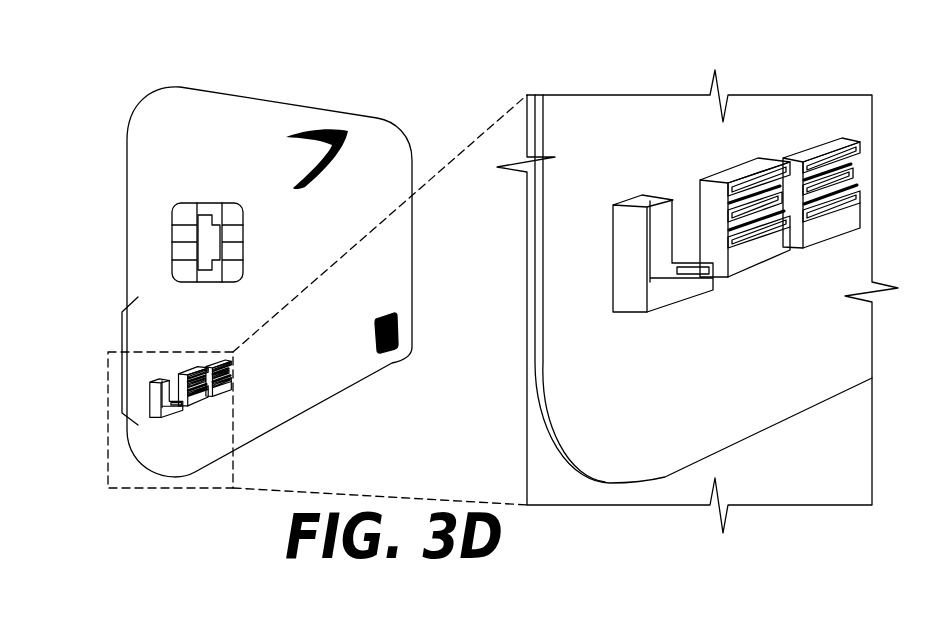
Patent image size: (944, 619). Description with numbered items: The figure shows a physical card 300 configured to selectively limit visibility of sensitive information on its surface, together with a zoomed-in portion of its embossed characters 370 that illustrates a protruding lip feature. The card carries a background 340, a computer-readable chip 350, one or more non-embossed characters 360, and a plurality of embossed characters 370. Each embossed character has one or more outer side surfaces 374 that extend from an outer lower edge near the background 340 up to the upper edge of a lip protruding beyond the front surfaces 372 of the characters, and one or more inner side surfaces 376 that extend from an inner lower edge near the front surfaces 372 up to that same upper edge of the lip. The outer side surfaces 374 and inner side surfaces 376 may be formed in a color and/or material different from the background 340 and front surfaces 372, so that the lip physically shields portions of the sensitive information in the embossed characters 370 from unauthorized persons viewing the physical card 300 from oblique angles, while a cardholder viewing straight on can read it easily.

The physical card 300 is at (398, 76).
The background 340 is at (377, 211).
The computer-readable chip 350 is at (171, 212).
The non-embossed characters 360 is at (338, 142).
The embossed characters 370 is at (120, 352).
The front surfaces 372 is at (166, 400).
The outer side surfaces 374 is at (157, 418).
The inner side surfaces 376 is at (172, 394).